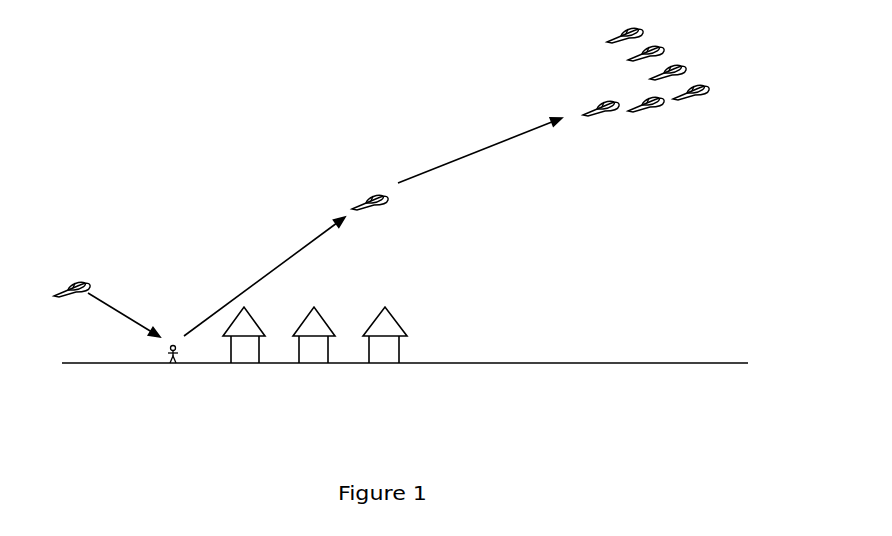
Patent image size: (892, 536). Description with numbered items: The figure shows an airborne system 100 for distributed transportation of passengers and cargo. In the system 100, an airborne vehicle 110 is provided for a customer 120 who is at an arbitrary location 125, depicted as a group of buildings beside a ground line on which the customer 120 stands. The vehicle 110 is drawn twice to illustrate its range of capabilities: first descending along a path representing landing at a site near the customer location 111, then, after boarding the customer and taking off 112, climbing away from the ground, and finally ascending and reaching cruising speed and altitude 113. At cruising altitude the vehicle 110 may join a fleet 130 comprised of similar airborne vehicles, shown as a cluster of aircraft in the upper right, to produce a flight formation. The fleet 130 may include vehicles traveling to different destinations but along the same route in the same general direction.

The system 100 is at (427, 455).
The vehicle 110 is at (210, 233).
The landing at a site near customer location 111 is at (124, 312).
The boarding a customer and taking off 112 is at (264, 276).
The ascending and reaching cruising speed and altitude 113 is at (480, 150).
The customer 120 is at (167, 373).
The arbitrary location 125 is at (315, 328).
The fleet 130 is at (641, 72).